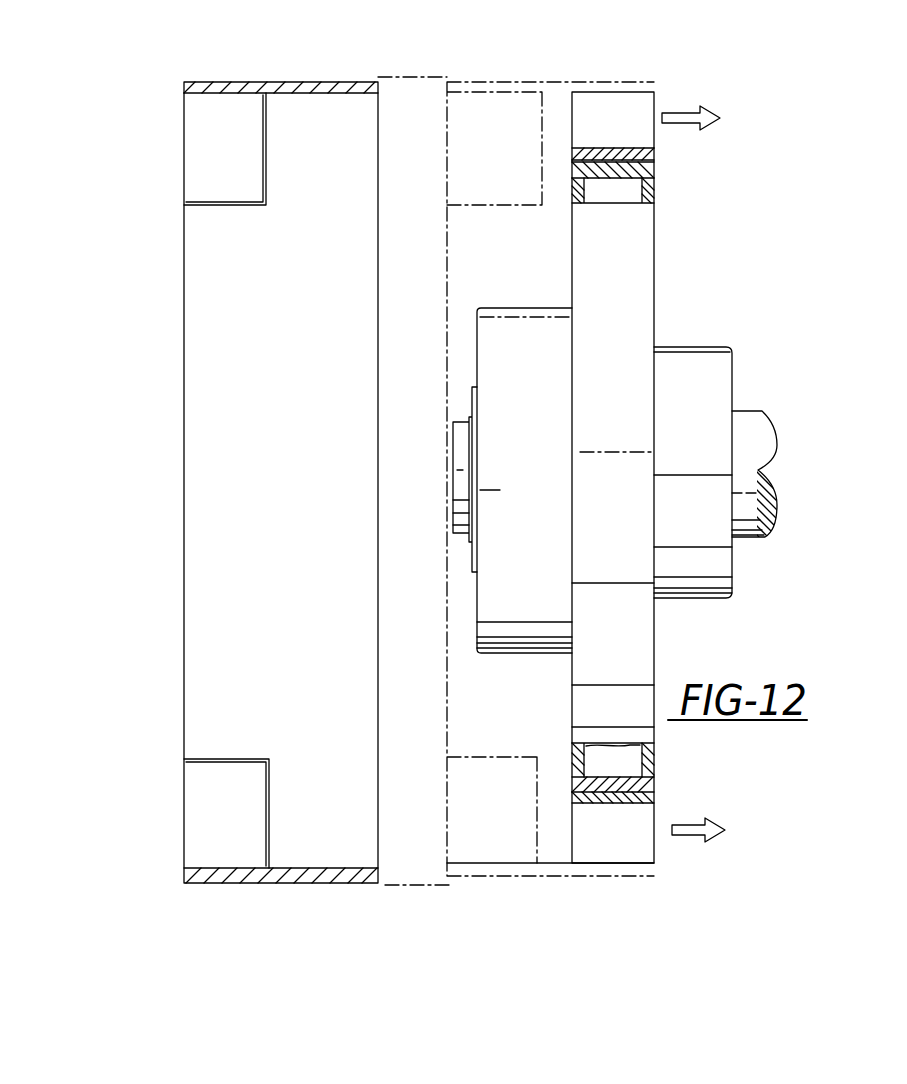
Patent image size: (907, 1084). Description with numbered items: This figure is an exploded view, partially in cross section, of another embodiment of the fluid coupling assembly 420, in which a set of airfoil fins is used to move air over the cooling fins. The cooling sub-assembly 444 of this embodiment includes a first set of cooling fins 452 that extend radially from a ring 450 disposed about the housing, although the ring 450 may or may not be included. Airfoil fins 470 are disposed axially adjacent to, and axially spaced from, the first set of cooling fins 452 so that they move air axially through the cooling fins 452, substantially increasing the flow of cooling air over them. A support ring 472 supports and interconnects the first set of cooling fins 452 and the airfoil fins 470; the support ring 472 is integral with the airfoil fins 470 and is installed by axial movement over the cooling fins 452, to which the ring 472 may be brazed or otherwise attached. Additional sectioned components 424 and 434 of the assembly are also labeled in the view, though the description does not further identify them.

The fluid coupling assembly 420 is at (806, 666).
The seal 424 is at (578, 190).
The bearing 434 is at (648, 184).
The cooling sub-assembly 444 is at (603, 877).
The ring 450 is at (620, 157).
The first set of cooling fins 452 is at (615, 103).
The airfoil fins 470 is at (262, 187).
The support ring 472 is at (320, 88).